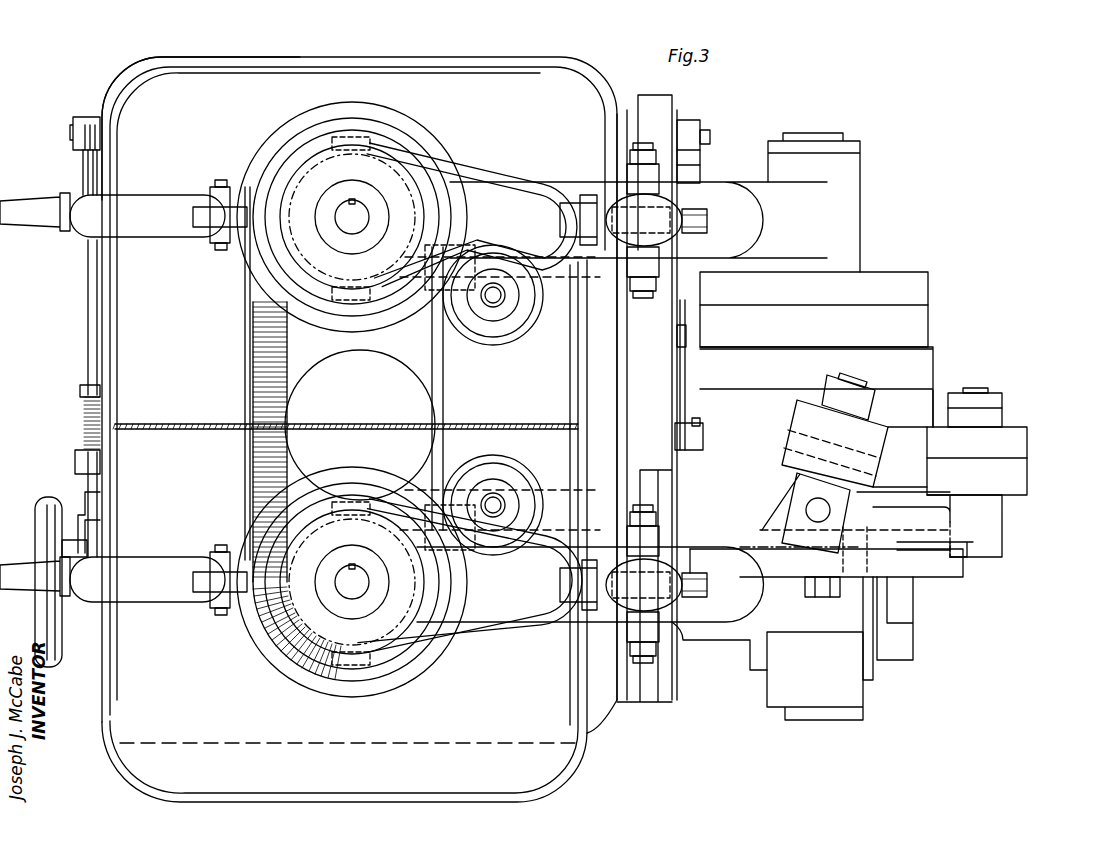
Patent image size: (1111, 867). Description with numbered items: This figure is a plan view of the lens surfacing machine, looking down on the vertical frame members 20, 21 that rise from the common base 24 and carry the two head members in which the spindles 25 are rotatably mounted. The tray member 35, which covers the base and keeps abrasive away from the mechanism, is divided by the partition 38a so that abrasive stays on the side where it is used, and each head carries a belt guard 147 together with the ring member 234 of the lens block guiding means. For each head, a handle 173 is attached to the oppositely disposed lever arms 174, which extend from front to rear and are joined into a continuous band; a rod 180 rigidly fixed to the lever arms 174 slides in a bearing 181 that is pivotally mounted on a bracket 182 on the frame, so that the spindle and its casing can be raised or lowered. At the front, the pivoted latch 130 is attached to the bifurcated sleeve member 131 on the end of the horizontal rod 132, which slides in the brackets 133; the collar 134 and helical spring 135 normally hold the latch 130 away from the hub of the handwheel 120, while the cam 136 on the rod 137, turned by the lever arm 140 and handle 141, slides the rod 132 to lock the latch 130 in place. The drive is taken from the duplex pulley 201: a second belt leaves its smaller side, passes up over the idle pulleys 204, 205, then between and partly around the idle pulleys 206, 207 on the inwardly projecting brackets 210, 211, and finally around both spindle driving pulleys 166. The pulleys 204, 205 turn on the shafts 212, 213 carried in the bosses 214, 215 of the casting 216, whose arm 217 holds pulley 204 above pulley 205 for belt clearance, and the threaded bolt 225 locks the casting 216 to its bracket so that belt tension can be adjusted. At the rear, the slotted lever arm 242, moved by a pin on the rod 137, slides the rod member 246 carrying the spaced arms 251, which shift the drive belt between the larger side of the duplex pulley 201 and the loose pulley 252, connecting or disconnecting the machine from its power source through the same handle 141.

The vertical frame member 20 is at (718, 625).
The vertical frame member 21 is at (760, 215).
The common base 24 is at (102, 722).
The spindle 25 is at (360, 208).
The tray member 35 is at (117, 135).
The partition 38a is at (188, 422).
The handwheel 120 is at (50, 497).
The pivoted latch 130 is at (92, 525).
The bifurcated sleeve member 131 is at (96, 495).
The horizontal rod 132 is at (88, 322).
The bracket 133 is at (78, 456).
The collar 134 is at (80, 392).
The helical spring 135 is at (84, 418).
The cam 136 is at (94, 120).
The rod 137 is at (710, 132).
The lever arm 140 is at (80, 152).
The handle 141 is at (26, 207).
The belt guard 147 is at (245, 372).
The spindle driving pulley 166 is at (400, 145).
The handle 173 is at (150, 207).
The lever arm 174 is at (505, 172).
The rod 180 is at (707, 222).
The bearing 181 is at (668, 210).
The bracket 182 is at (632, 262).
The duplex pulley 201 is at (935, 395).
The idle pulley 204 is at (1025, 450).
The idle pulley 205 is at (786, 436).
The idle pulley 206 is at (508, 330).
The idle pulley 207 is at (530, 478).
The bracket 210 is at (458, 248).
The bracket 211 is at (425, 500).
The shaft 212 is at (988, 390).
The shaft 213 is at (862, 372).
The boss 214 is at (1002, 522).
The boss 215 is at (805, 500).
The casting 216 is at (880, 536).
The arm 217 is at (960, 555).
The threaded bolt 225 is at (805, 590).
The ring member 234 is at (253, 350).
The lever arm 242 is at (700, 165).
The rod member 246 is at (678, 372).
The rearwardly projecting arm 251 is at (700, 340).
The loose pulley 252 is at (910, 273).